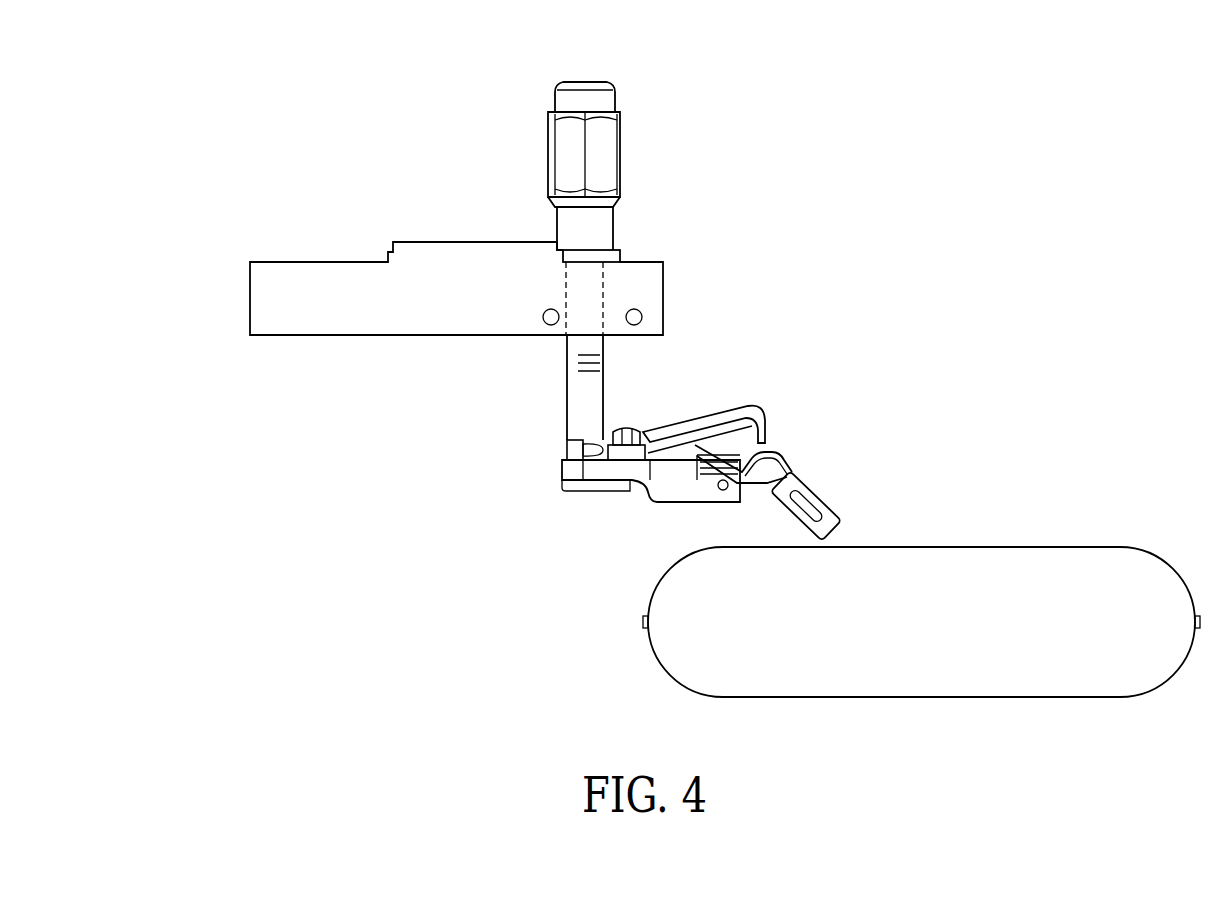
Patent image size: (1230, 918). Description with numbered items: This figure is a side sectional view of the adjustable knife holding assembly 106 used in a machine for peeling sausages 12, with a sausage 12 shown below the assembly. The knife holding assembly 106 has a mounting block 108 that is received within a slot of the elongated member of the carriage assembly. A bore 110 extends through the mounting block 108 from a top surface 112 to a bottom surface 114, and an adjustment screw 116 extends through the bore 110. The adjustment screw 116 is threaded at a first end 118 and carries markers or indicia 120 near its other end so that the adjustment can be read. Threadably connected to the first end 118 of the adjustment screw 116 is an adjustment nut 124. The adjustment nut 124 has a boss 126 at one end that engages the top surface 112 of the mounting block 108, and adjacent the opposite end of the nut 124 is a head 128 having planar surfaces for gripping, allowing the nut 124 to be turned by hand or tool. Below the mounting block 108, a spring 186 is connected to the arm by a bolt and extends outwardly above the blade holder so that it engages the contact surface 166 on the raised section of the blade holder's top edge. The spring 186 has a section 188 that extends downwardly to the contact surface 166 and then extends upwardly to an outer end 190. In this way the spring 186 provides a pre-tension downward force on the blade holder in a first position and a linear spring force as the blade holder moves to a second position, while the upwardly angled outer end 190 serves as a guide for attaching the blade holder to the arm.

The sausages 12 is at (915, 665).
The adjustable knife holding assembly 106 is at (735, 150).
The mounting block 108 is at (270, 302).
The bore 110 is at (596, 292).
The top surface 112 is at (323, 262).
The bottom surface 114 is at (341, 337).
The adjustment screw 116 is at (566, 385).
The first end 118 is at (585, 80).
The markers or indicia 120 is at (600, 360).
The adjustment nut 124 is at (605, 140).
The boss 126 is at (620, 258).
The head 128 is at (622, 172).
The contact surface 166 is at (775, 458).
The spring 186 is at (760, 405).
The section 188 is at (765, 430).
The outer end 190 is at (778, 435).